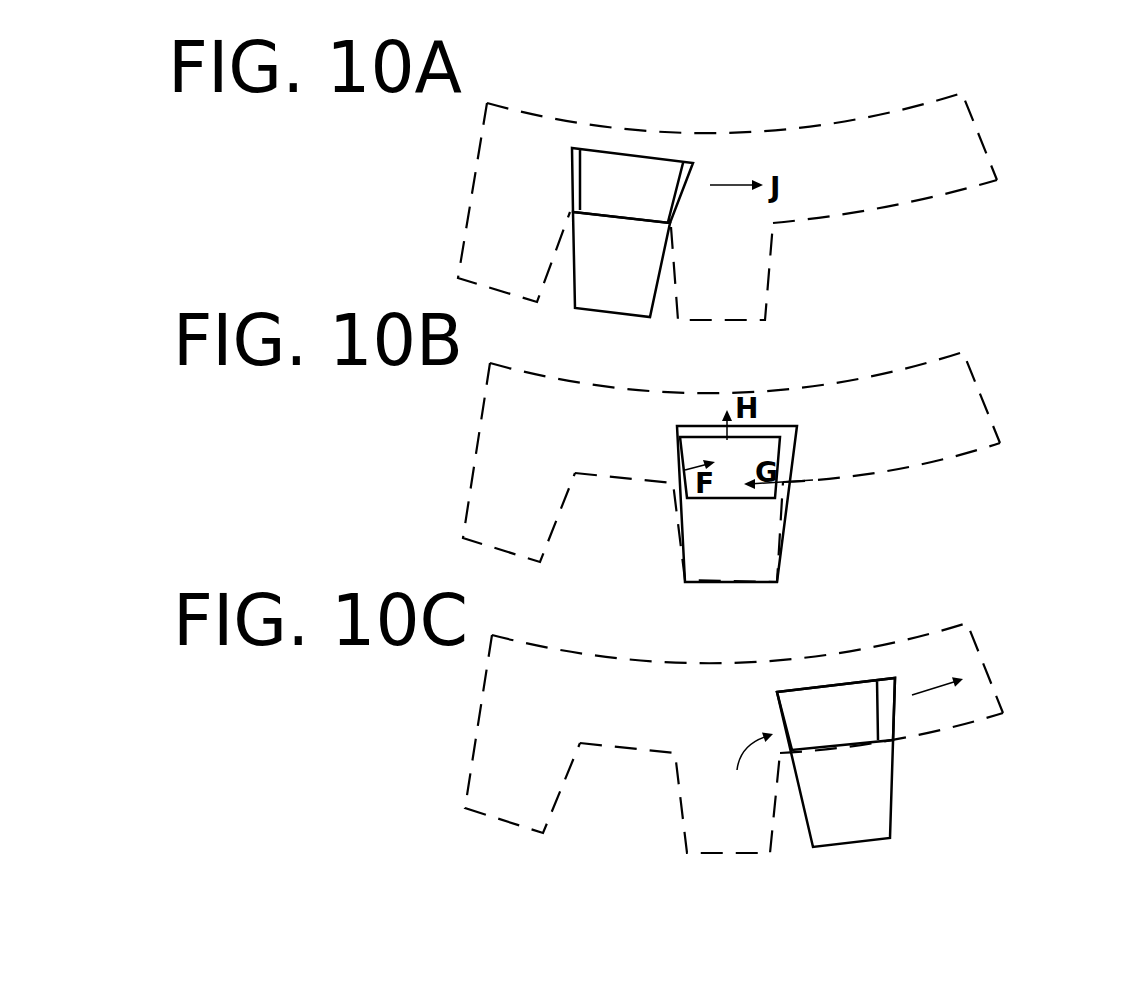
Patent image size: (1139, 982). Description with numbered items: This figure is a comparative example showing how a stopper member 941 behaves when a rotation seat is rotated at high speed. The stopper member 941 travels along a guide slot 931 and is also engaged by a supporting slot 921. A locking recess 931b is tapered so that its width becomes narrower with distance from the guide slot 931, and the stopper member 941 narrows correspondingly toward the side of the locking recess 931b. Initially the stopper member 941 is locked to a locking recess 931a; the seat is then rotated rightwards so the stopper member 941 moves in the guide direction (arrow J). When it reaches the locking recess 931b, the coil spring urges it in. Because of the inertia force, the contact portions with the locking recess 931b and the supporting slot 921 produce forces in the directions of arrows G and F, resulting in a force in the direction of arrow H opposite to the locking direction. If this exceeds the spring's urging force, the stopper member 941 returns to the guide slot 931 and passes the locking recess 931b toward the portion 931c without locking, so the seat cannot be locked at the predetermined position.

In FIG. 10A, the guide slot 931 is at (780, 238).
In FIG. 10B, the guide slot 931 is at (783, 500).
In FIG. 10C, the guide slot 931 is at (769, 739).
In FIG. 10A, the locking recess 931a is at (488, 285).
In FIG. 10B, the locking recess 931a is at (492, 548).
In FIG. 10C, the locking recess 931a is at (467, 808).
In FIG. 10A, the locking recess 931b is at (693, 320).
In FIG. 10B, the locking recess 931b is at (697, 582).
In FIG. 10C, the locking recess 931b is at (688, 853).
In FIG. 10A, the second portion of holding member 931c is at (835, 213).
In FIG. 10B, the second portion of holding member 931c is at (833, 478).
In FIG. 10C, the second portion of holding member 931c is at (905, 746).
In FIG. 10A, the supporting slot 921 is at (596, 306).
In FIG. 10B, the supporting slot 921 is at (775, 530).
In FIG. 10C, the supporting slot 921 is at (887, 790).
In FIG. 10A, the stopper member 941 is at (595, 178).
In FIG. 10B, the stopper member 941 is at (758, 448).
In FIG. 10C, the stopper member 941 is at (832, 698).